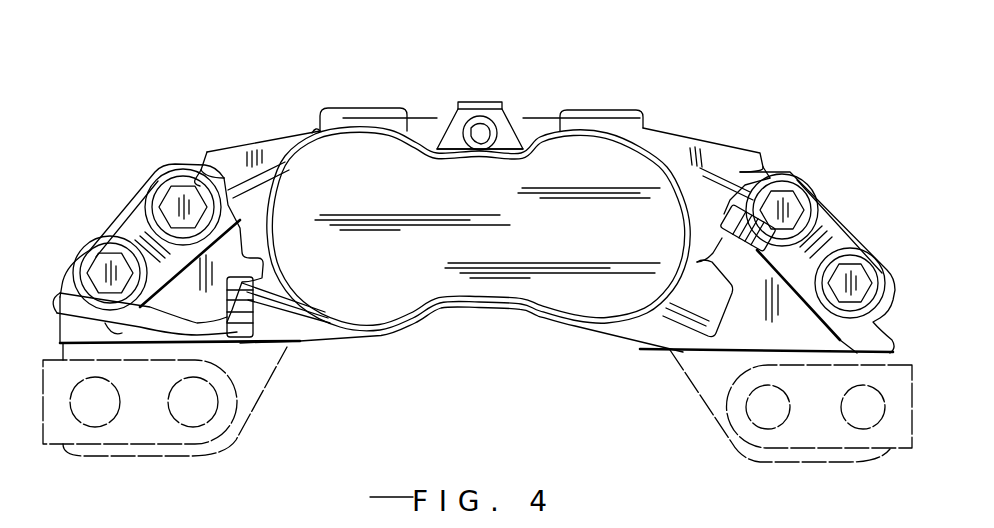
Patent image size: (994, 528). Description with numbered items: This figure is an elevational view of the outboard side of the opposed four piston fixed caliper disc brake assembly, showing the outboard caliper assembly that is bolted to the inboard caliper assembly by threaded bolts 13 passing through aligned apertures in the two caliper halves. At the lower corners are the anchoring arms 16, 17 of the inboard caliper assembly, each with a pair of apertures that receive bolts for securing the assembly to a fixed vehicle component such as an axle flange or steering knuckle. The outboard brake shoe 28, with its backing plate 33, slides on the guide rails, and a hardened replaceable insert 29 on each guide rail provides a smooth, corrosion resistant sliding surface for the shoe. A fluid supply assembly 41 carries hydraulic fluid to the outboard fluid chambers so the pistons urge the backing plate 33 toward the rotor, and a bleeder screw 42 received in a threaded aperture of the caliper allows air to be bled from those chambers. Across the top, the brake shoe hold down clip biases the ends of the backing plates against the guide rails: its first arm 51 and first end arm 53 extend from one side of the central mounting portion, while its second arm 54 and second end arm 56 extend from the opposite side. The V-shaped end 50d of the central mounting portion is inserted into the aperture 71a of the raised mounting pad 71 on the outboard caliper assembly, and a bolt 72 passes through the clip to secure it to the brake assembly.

The threaded bolts 13 is at (100, 262).
The anchoring arm 16 is at (745, 462).
The anchoring arm 17 is at (160, 470).
The outboard brake shoe 28 is at (720, 153).
The hardened replaceable insert 29 is at (200, 168).
The backing plate 33 is at (234, 150).
The fluid supply assembly 41 is at (55, 292).
The bleeder screw 42 is at (706, 243).
The V-shaped end 50d is at (442, 152).
The first arm 51 is at (552, 112).
The first end arm 53 is at (648, 128).
The second arm 54 is at (417, 110).
The second end arm 56 is at (318, 130).
The raised mounting pad 71 is at (512, 147).
The aperture 71a is at (488, 146).
The bolt 72 is at (482, 100).